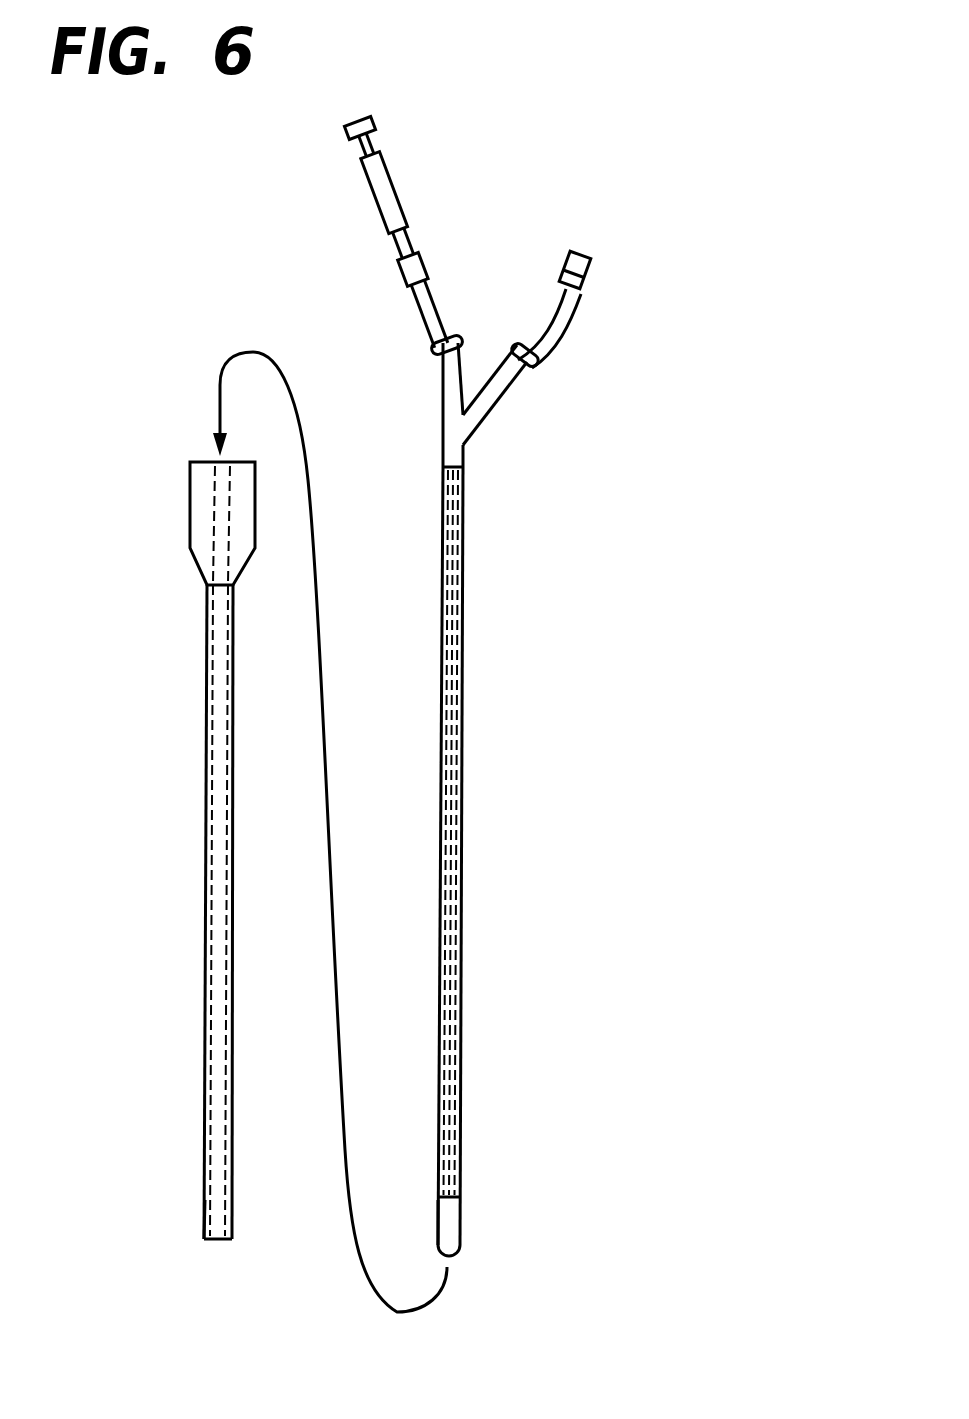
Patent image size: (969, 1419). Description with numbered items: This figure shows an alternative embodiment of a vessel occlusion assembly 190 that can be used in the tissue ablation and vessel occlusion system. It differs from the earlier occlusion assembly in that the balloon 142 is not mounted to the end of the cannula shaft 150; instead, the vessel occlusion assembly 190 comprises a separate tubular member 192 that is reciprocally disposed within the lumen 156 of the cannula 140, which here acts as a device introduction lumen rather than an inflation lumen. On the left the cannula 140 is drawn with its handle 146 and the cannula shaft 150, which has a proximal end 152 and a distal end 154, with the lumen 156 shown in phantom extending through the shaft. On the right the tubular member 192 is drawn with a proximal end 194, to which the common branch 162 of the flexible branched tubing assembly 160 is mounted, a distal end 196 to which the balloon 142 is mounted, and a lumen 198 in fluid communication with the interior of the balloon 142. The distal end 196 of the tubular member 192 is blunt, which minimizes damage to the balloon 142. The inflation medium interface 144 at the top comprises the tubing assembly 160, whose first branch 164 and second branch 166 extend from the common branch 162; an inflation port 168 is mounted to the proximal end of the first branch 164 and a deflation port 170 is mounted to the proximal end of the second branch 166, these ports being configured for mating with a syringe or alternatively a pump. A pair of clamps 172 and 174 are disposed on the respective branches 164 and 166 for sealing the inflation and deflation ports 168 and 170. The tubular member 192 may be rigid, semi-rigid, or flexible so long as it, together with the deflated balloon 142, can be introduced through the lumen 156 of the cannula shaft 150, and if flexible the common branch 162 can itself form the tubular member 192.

The cannula 140 is at (161, 856).
The balloon 142 is at (460, 1223).
The inflation medium interface 144 is at (468, 294).
The handle 146 is at (190, 513).
The cannula shaft 150 is at (205, 848).
The proximal end 152 is at (206, 625).
The distal end 154 is at (203, 1202).
The lumen 156 is at (205, 928).
The flexible branched tubing assembly 160 is at (474, 407).
The common branch 162 is at (443, 437).
The first branch 164 is at (428, 312).
The second branch 166 is at (558, 343).
The inflation port 168 is at (402, 273).
The deflation port 170 is at (592, 263).
The clamp 172 is at (433, 352).
The clamp 174 is at (540, 363).
The vessel occlusion assembly 190 is at (544, 698).
The tubular member 192 is at (463, 693).
The proximal end 194 is at (463, 498).
The distal end 196 is at (460, 1173).
The lumen 198 is at (463, 748).